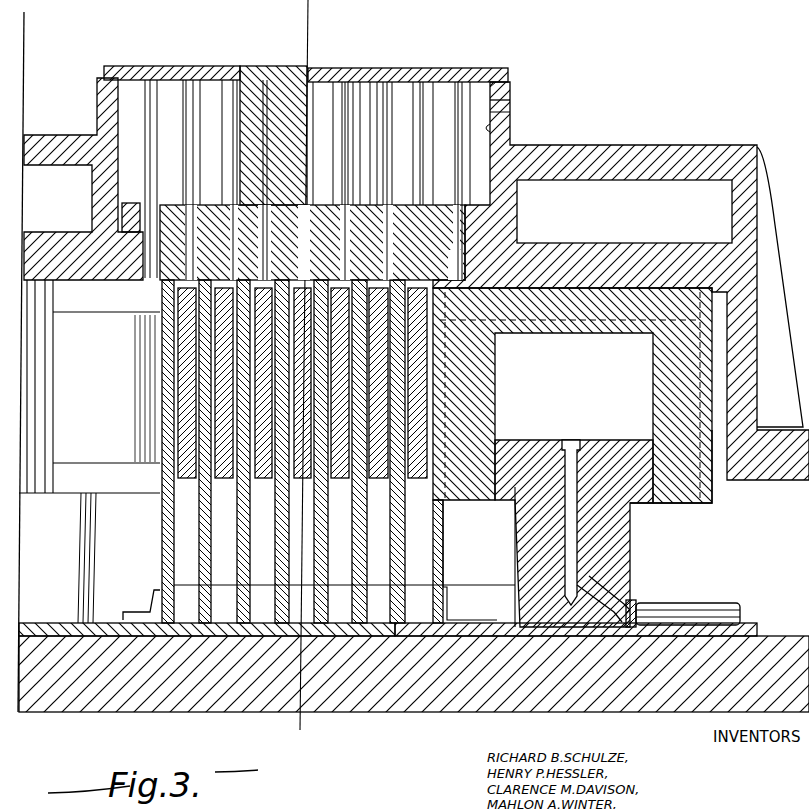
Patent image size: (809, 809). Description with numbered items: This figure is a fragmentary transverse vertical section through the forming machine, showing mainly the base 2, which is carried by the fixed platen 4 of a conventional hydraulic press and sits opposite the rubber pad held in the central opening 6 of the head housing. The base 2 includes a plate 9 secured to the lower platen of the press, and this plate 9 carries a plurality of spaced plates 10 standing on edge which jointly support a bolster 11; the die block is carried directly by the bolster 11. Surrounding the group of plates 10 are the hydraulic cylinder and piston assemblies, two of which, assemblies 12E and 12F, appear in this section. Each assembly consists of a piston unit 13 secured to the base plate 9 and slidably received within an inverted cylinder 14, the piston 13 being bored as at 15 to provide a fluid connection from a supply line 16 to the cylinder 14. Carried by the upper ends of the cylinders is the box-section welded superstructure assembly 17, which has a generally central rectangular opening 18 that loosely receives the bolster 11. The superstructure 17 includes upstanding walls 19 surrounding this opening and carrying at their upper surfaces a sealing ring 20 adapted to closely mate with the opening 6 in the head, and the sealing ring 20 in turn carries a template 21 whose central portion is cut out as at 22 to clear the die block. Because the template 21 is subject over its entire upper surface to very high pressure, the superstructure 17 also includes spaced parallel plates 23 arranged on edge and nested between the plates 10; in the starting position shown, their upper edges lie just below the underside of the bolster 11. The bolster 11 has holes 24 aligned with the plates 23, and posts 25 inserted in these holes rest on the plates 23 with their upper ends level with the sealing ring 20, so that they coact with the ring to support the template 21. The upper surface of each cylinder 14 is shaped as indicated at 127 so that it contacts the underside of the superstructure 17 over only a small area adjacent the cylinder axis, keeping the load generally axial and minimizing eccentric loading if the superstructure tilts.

The base 2 is at (603, 145).
The fixed platen 4 is at (507, 705).
The central opening 6 is at (277, 68).
The plate 9 is at (492, 626).
The spaced plates 10 is at (176, 540).
The bolster 11 is at (160, 219).
The hydraulic cylinder and piston assembly 12E is at (673, 506).
The hydraulic cylinder and piston assembly 12F is at (102, 505).
The piston unit 13 is at (612, 573).
The inverted cylinder 14 is at (668, 392).
The bore 15 is at (565, 575).
The supply line 16 is at (707, 618).
The superstructure assembly 17 is at (682, 157).
The central rectangular opening 18 is at (490, 128).
The upstanding walls 19 is at (512, 112).
The sealing ring 20 is at (512, 96).
The template 21 is at (398, 68).
The cut-out 22 is at (245, 65).
The spaced parallel plates 23 is at (218, 385).
The holes 24 is at (263, 222).
The posts 25 is at (187, 123).
The shaped upper surface 127 is at (662, 268).